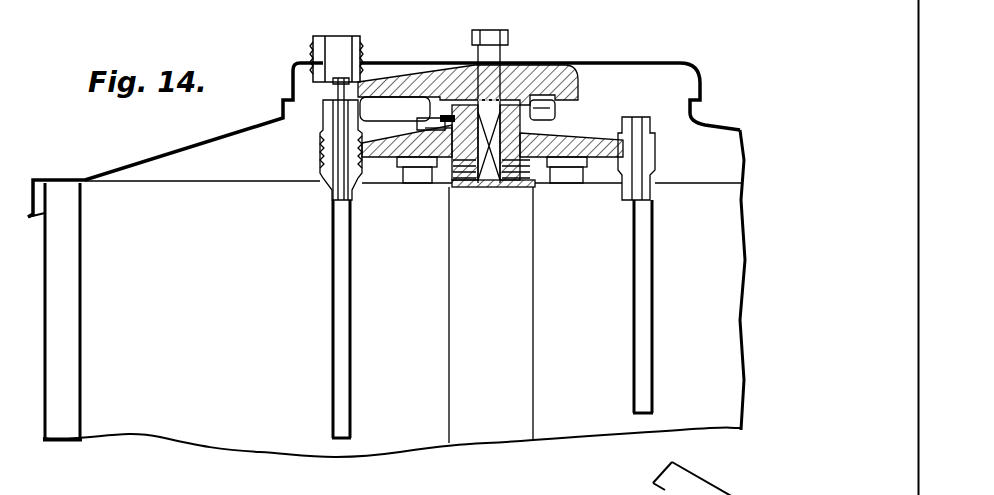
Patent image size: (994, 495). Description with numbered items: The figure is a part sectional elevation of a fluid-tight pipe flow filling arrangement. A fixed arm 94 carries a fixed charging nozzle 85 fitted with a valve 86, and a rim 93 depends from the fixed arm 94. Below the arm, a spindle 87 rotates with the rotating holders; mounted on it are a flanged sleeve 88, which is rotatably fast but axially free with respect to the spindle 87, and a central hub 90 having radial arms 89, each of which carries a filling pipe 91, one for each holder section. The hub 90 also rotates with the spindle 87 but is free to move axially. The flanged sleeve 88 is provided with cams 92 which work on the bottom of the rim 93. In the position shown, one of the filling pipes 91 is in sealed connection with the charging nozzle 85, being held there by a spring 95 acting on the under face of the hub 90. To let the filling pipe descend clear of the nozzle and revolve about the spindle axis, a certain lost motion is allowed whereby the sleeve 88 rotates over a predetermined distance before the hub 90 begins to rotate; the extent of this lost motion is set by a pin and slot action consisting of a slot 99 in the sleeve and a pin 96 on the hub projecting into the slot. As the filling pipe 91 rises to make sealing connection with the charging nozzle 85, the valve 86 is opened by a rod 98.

The charging nozzle 85 is at (328, 107).
The valve 86 is at (330, 68).
The spindle 87 is at (495, 177).
The flanged sleeve 88 is at (533, 173).
The radial arms 89 is at (382, 150).
The central hub 90 is at (447, 133).
The filling pipe 91 is at (352, 350).
The cams 92 is at (447, 103).
The rim 93 is at (563, 107).
The fixed arm 94 is at (388, 78).
The spring 95 is at (460, 176).
The pin 96 is at (430, 135).
The rod 98 is at (325, 187).
The slot 99 is at (417, 124).